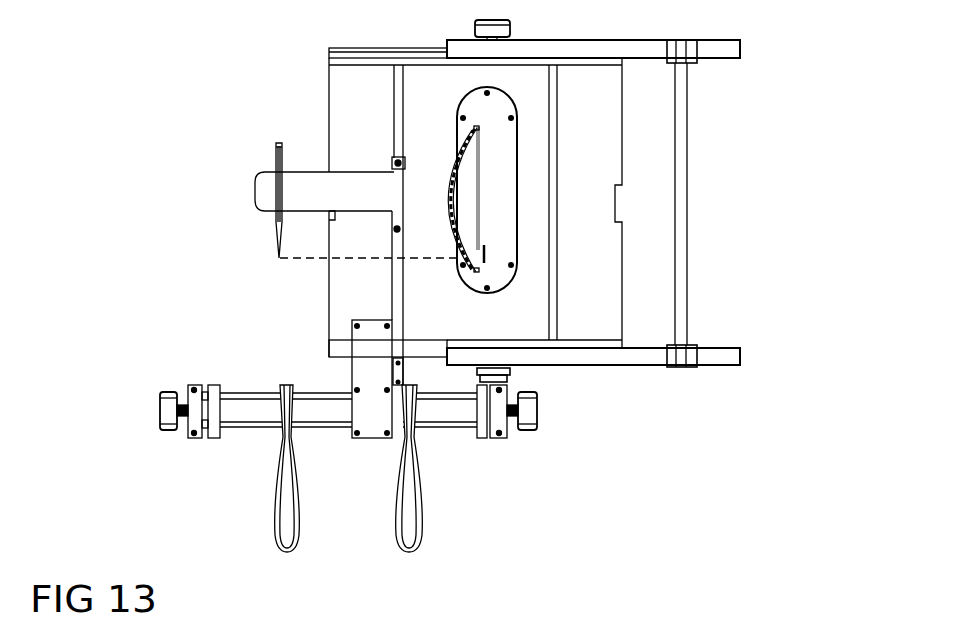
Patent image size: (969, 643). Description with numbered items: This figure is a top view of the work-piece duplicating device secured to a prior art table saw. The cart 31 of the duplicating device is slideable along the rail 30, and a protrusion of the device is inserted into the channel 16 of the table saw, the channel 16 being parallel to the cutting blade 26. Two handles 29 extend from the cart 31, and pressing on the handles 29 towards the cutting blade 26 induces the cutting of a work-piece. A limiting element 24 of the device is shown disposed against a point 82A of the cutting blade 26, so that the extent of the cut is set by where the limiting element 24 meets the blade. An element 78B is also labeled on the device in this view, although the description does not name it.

The frame 16 is at (396, 133).
The pivot bolt 78B is at (405, 164).
The curved guide track 26 is at (463, 193).
The slot 82A is at (459, 265).
The needle 24 is at (272, 258).
The arm bracket 30 is at (397, 278).
The mounting plate 31 is at (365, 408).
The handle 29 is at (288, 535).